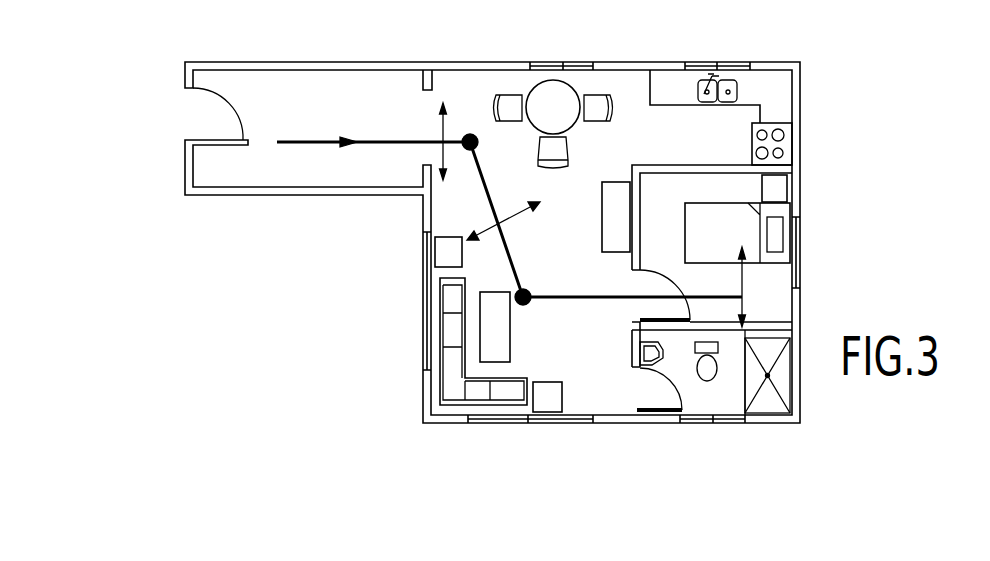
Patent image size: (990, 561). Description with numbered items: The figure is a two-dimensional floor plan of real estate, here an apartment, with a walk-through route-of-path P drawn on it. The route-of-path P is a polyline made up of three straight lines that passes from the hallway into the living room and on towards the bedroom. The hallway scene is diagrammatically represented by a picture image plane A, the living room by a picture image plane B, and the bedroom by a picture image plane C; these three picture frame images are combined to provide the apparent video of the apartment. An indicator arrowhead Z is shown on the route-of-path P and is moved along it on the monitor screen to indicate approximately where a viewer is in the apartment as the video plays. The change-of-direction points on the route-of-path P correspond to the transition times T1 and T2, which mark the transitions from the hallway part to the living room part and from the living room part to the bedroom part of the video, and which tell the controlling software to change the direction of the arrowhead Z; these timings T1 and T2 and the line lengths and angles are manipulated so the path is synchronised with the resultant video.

The indicator arrowhead Z is at (367, 127).
The route-of-path P is at (305, 145).
The picture image plane A is at (450, 130).
The picture image plane B is at (512, 216).
The picture image plane C is at (750, 287).
The transition time T1 is at (485, 152).
The transition time T2 is at (606, 223).